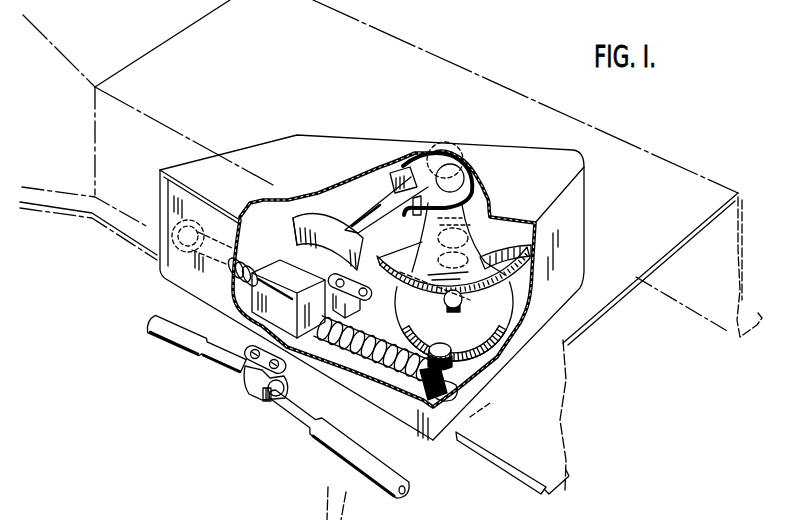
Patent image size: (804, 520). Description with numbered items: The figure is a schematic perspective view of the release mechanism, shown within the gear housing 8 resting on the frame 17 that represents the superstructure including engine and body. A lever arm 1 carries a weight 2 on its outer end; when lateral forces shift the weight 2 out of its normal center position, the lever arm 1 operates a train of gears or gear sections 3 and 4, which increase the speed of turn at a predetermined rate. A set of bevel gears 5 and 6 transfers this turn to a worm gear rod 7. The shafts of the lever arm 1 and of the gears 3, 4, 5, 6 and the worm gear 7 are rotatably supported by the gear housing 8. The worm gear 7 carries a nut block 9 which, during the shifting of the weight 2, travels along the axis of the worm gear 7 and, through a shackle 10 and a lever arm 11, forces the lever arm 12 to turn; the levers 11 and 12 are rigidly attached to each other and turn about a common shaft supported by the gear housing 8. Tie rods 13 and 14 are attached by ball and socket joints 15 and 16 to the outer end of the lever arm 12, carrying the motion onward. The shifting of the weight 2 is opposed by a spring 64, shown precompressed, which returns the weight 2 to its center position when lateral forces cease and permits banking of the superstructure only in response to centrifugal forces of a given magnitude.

The lever arm 1 is at (360, 217).
The weight 2 is at (293, 222).
The gear section 3 is at (507, 261).
The gear section 4 is at (500, 312).
The bevel gear 5 is at (448, 372).
The bevel gear 6 is at (422, 395).
The worm gear rod 7 is at (363, 365).
The gear housing 8 is at (360, 143).
The nut block 9 is at (268, 313).
The shackle 10 is at (374, 321).
The lever arm 11 is at (377, 275).
The lever arm 12 is at (285, 361).
The tie rod 13 is at (170, 337).
The tie rod 14 is at (336, 450).
The ball and socket joint 15 is at (247, 388).
The ball and socket joint 16 is at (268, 401).
The frame 17 is at (631, 152).
The spring 64 is at (473, 183).